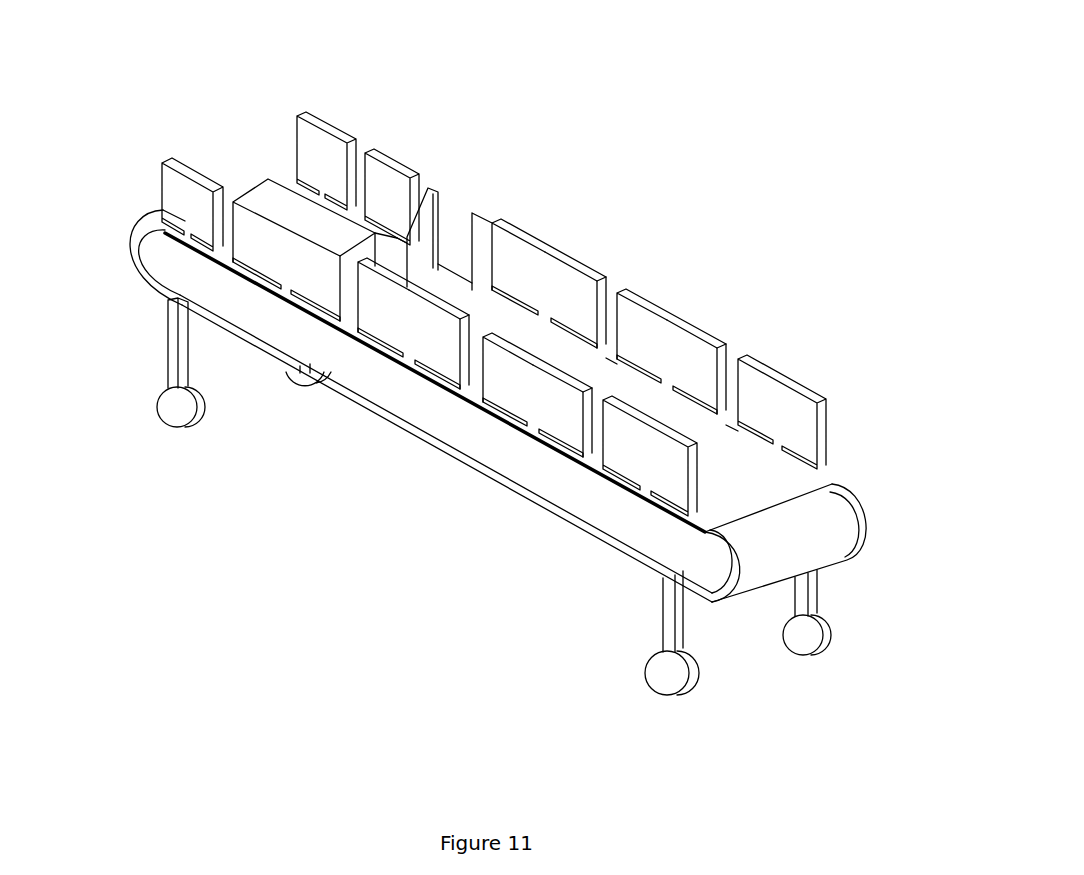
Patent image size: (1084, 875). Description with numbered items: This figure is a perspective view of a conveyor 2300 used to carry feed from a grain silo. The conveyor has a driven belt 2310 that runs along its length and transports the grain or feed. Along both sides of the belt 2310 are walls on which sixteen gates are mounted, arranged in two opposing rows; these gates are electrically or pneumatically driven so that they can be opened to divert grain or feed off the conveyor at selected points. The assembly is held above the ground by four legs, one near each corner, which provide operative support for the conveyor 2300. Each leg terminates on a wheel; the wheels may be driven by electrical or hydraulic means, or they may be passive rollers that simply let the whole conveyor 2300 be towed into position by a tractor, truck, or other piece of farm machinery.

The conveyor 2300 is at (503, 414).
The driven belt 2310 is at (815, 532).